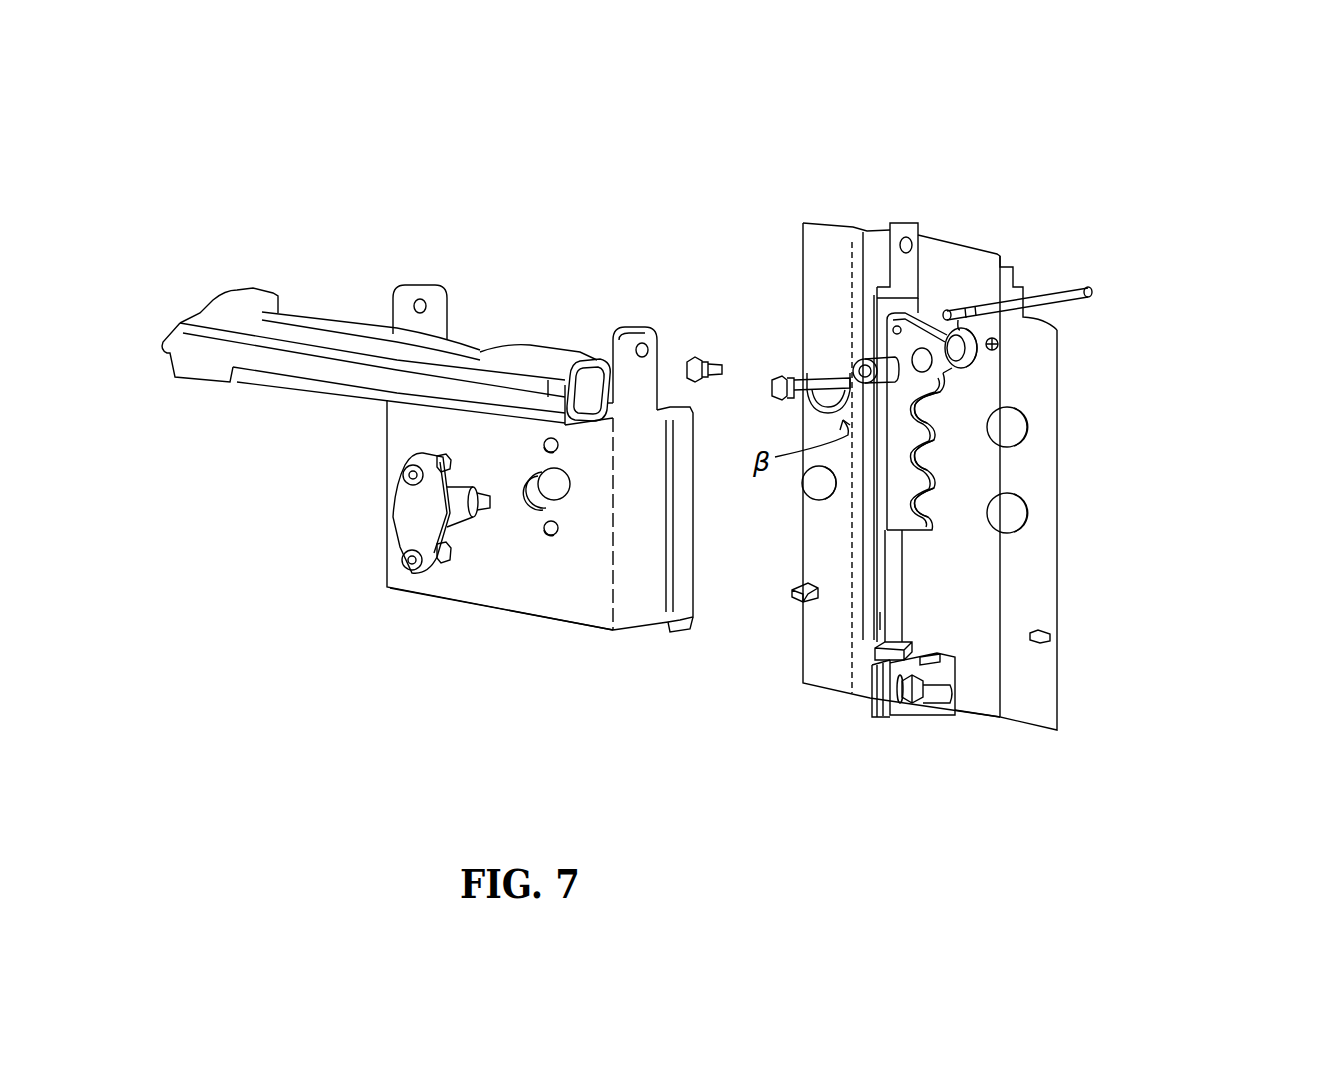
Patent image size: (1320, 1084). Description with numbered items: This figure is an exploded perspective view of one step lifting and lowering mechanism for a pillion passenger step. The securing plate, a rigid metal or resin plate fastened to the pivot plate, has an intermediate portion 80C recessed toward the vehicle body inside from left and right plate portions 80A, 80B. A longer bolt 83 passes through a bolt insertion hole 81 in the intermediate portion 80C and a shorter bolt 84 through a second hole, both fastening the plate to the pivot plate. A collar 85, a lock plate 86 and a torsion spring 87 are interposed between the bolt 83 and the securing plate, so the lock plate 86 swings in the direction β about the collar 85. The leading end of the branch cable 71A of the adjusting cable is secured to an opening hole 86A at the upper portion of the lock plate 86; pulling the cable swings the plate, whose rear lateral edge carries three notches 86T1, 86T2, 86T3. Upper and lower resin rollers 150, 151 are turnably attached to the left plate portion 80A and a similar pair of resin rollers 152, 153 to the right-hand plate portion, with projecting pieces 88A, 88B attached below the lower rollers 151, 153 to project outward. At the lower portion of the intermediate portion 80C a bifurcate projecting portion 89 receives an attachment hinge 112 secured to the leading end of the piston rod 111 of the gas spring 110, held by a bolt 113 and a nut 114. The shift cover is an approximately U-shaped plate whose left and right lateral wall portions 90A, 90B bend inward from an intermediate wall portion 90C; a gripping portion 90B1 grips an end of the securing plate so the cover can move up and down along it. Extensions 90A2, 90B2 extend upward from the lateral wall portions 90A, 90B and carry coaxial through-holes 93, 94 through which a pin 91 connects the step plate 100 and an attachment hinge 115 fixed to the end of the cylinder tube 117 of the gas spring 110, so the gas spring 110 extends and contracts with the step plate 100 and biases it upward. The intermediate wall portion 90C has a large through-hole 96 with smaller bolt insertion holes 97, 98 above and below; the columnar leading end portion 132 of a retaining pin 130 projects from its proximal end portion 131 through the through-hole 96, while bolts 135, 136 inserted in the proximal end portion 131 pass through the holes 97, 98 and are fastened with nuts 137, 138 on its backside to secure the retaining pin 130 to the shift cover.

The step plate 100 is at (193, 313).
The extension 90A2 is at (403, 288).
The through-hole 93 is at (420, 301).
The pin 91 is at (463, 347).
The through-hole 94 is at (630, 326).
The extension 90B2 is at (647, 325).
The bolt 84 is at (692, 357).
The left lateral wall portion 90A is at (377, 550).
The intermediate wall portion 90C is at (455, 592).
The right lateral wall portion 90B is at (622, 632).
The gripping portion 90B1 is at (677, 623).
The through-hole (bolt insertion hole) 97 is at (545, 452).
The through-hole 96 is at (540, 503).
The through-hole (bolt insertion hole) 98 is at (552, 536).
The retaining pin 130 is at (365, 572).
The proximal end portion 131 is at (398, 498).
The bolt 135 is at (405, 470).
The bolt 136 is at (403, 552).
The nut 137 is at (436, 455).
The nut 138 is at (443, 573).
The columnar leading end portion 132 is at (488, 512).
The left plate portion 80A is at (823, 688).
The right plate portion 80B is at (1043, 733).
The intermediate portion 80C is at (980, 715).
The collar 85 is at (857, 232).
The cylinder tube 117 is at (874, 293).
The gas spring 110 is at (873, 590).
The attachment hinge 115 is at (905, 223).
The piston rod 111 is at (880, 623).
The lock plate 86 is at (944, 388).
The opening hole 86A is at (921, 312).
The torsion spring 87 is at (978, 360).
The notch 86T1 is at (937, 445).
The notch 86T2 is at (938, 494).
The notch 86T3 is at (935, 526).
The branch cable 71A is at (1068, 285).
The bolt insertion hole 81 is at (998, 342).
The bolt 83 is at (778, 372).
The upper resin roller 150 is at (808, 410).
The lower resin roller 151 is at (806, 495).
The upper resin roller 152 is at (1028, 433).
The lower resin roller 153 is at (1028, 523).
The projecting piece 88A is at (790, 595).
The projecting piece 88B is at (1045, 645).
The attachment hinge 112 is at (862, 673).
The bolt 113 is at (868, 698).
The bifurcate projecting portion 89 is at (900, 720).
The nut 114 is at (918, 712).